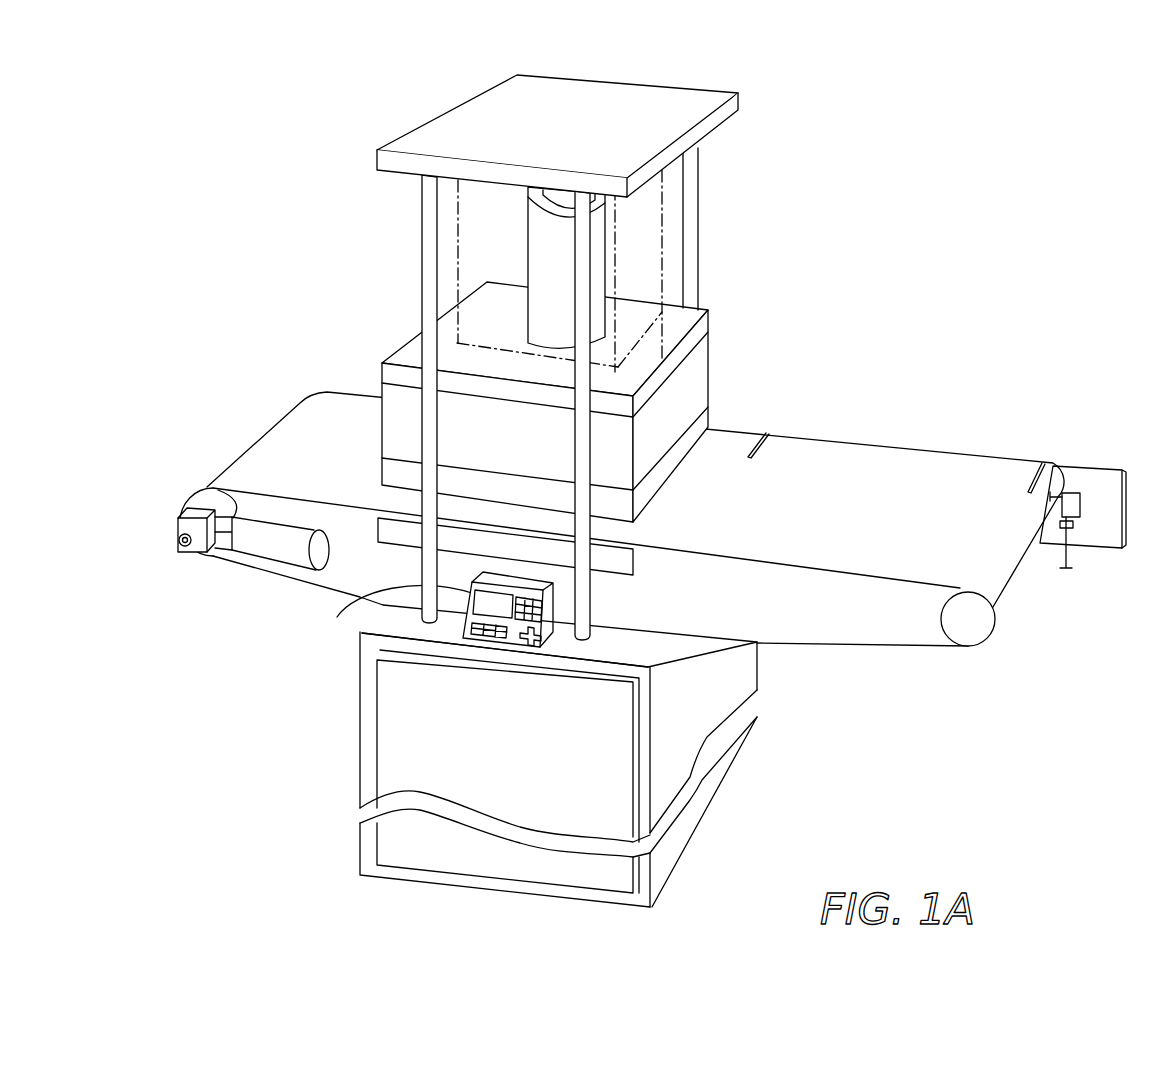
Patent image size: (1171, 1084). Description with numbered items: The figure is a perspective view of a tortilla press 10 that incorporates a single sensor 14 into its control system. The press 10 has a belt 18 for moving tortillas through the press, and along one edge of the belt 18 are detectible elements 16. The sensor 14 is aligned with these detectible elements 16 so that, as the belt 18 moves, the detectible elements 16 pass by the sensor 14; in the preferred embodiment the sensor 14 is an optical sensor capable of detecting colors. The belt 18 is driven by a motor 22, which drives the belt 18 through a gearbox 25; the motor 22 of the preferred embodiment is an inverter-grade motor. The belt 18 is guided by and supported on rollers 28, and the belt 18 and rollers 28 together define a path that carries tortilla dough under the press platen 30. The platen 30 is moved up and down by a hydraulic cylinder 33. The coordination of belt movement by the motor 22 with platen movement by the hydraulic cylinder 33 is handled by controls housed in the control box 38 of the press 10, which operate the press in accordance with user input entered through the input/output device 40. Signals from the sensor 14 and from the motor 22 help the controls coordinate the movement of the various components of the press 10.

The tortilla press 10 is at (647, 491).
The sensor 14 is at (1070, 488).
The detectible elements 16 is at (757, 442).
The belt 18 is at (903, 463).
The motor 22 is at (260, 550).
The gearbox 25 is at (188, 557).
The rollers 28 is at (978, 628).
The press platen 30 is at (700, 386).
The hydraulic cylinder 33 is at (543, 242).
The control box 38 is at (407, 712).
The input/output device 40 is at (363, 600).